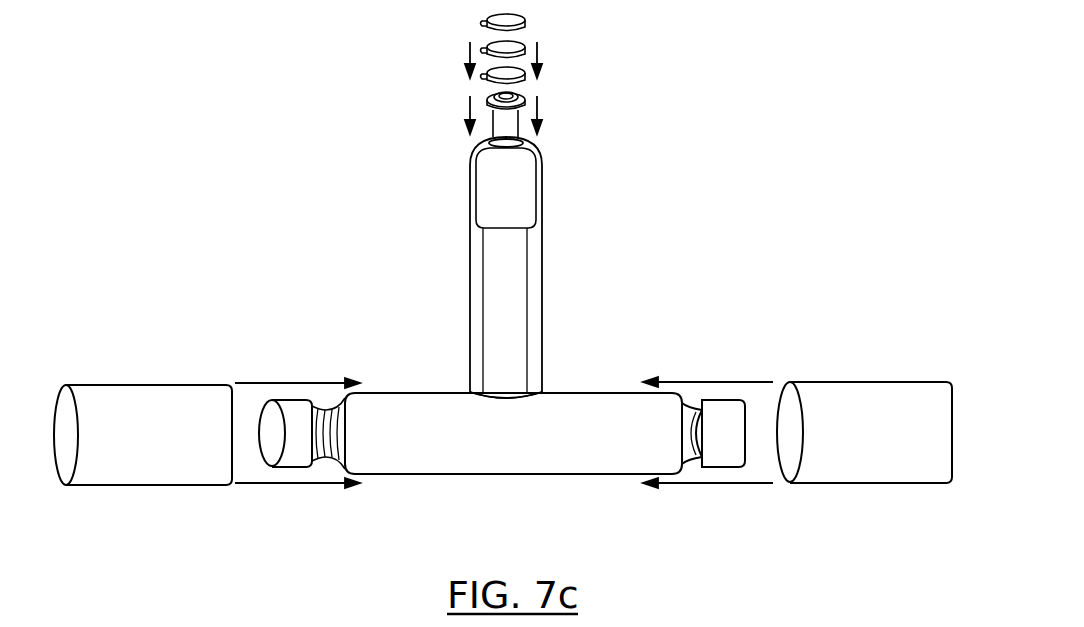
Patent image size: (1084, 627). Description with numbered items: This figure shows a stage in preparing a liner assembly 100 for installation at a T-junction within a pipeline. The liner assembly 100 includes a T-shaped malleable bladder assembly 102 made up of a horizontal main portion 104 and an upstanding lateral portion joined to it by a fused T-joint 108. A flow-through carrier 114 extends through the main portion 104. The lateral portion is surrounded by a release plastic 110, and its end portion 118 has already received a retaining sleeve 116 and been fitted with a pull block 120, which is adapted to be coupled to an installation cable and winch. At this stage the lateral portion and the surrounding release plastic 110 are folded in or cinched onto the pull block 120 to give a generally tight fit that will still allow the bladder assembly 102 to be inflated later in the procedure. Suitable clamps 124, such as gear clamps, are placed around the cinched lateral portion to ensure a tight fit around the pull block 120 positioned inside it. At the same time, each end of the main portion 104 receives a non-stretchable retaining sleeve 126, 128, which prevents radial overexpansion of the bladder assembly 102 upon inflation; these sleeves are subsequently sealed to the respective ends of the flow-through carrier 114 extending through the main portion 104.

The liner assembly 100 is at (695, 240).
The T-shaped malleable bladder assembly 102 is at (456, 416).
The main portion 104 is at (393, 402).
The fused T-joint 108 is at (525, 404).
The release plastic 110 is at (542, 218).
The flow-through carrier 114 is at (735, 433).
The retaining sleeve 116 is at (540, 227).
The end portion 118 is at (525, 177).
The pull block 120 is at (492, 99).
The clamps 124 is at (522, 43).
The non-stretchable retaining sleeve 126 is at (140, 460).
The non-stretchable retaining sleeve 128 is at (893, 396).